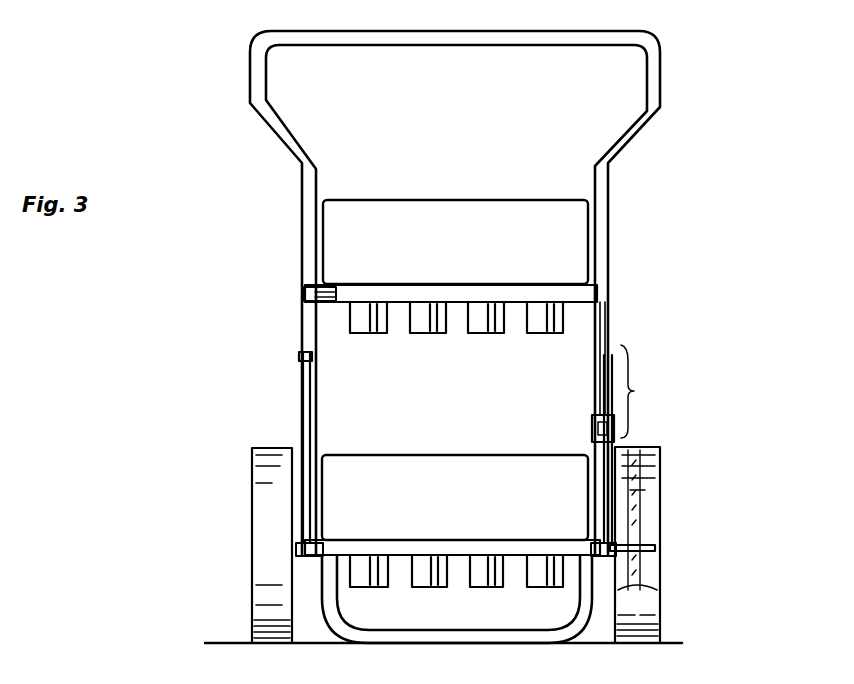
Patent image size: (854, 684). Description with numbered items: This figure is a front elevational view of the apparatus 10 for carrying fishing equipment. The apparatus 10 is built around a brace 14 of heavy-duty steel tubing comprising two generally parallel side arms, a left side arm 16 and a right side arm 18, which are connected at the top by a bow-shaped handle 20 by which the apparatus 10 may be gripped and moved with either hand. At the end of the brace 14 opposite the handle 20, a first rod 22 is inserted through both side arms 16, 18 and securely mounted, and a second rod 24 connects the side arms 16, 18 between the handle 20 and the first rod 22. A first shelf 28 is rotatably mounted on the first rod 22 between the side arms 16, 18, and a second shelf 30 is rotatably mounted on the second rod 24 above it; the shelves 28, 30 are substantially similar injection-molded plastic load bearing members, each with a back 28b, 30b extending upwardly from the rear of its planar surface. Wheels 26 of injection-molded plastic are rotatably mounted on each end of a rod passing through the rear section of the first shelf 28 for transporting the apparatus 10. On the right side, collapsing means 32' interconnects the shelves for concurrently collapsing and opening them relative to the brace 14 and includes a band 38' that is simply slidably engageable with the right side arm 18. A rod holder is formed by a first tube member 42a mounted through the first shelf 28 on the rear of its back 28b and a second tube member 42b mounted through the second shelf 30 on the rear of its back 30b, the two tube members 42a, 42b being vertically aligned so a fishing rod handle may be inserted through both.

The apparatus 10 is at (702, 112).
The brace 14 is at (408, 293).
The left side arm 16 is at (302, 217).
The right side arm 18 is at (608, 203).
The handle 20 is at (520, 40).
The first rod 22 is at (307, 557).
The second rod 24 is at (313, 322).
The wheels 26 is at (252, 501).
The first shelf 28 is at (452, 469).
The back of first shelf 28b is at (474, 499).
The second shelf 30 is at (451, 219).
The back of second shelf 30b is at (452, 242).
The collapsing means 32' is at (636, 370).
The band 38' is at (578, 430).
The first tube member 42a is at (362, 588).
The second tube member 42b is at (365, 334).